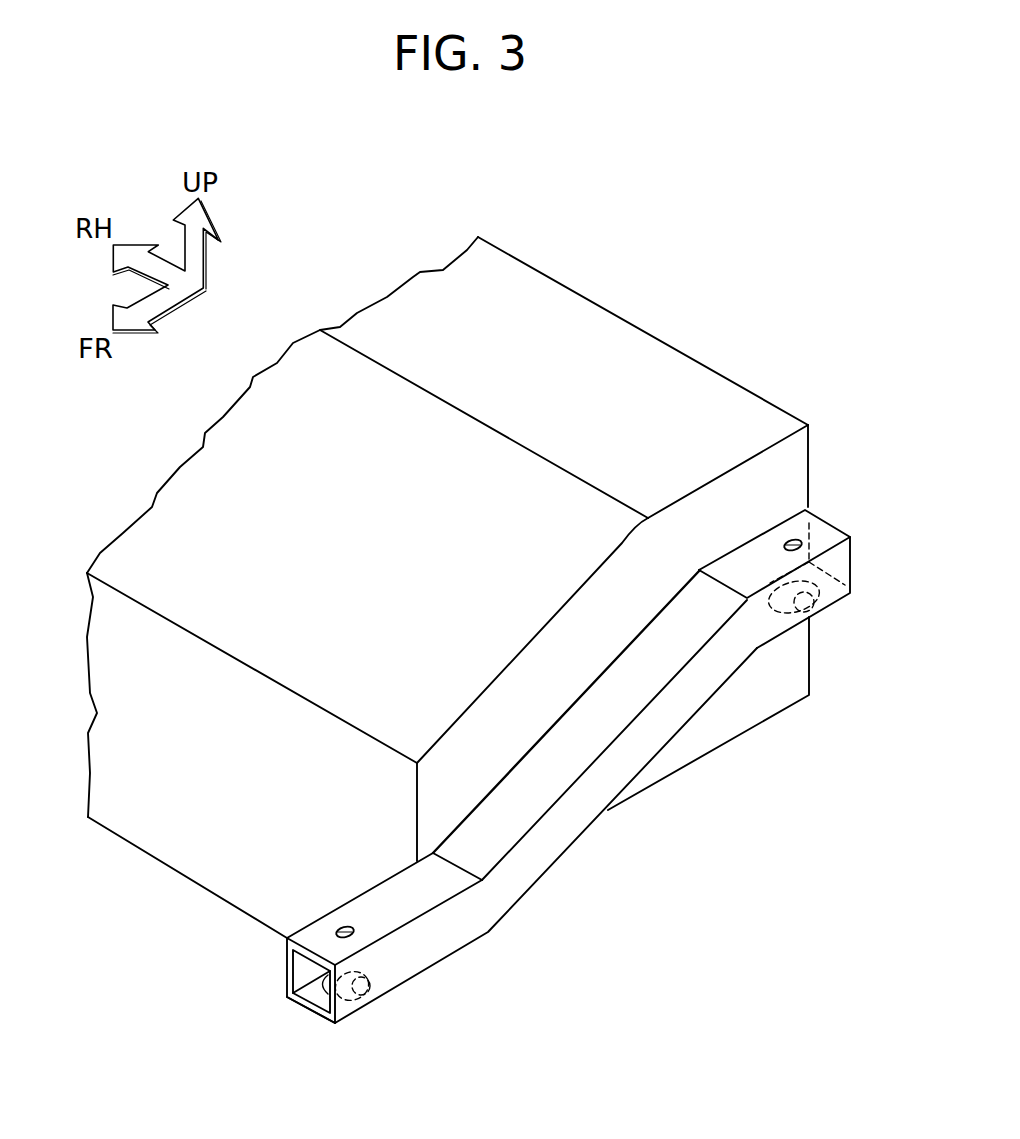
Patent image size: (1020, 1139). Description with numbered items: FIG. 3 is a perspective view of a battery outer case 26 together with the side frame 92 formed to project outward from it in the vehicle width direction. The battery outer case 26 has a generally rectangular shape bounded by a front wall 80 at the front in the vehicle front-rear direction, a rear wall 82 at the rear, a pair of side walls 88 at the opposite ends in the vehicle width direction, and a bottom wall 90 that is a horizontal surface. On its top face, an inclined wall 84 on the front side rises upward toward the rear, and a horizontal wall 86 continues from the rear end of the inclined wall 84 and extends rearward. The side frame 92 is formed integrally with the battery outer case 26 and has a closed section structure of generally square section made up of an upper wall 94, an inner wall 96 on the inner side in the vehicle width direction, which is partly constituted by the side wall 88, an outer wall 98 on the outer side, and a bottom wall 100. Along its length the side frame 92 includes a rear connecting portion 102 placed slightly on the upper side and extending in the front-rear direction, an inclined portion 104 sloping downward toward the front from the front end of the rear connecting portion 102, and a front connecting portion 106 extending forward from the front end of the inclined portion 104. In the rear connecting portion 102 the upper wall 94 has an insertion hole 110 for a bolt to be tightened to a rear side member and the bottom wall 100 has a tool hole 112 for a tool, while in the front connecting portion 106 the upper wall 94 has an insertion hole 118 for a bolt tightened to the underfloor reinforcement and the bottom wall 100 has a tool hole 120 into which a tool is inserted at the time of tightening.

The battery outer case 26 is at (528, 300).
The front wall 80 is at (197, 833).
The rear wall 82 is at (643, 328).
The inclined wall 84 is at (345, 533).
The horizontal wall 86 is at (575, 422).
The side wall 88 is at (533, 718).
The bottom wall 90 is at (712, 750).
The side frame 92 is at (610, 654).
The upper wall 94 is at (310, 943).
The inner wall 96 is at (287, 962).
The outer wall 98 is at (342, 1008).
The bottom wall 100 is at (303, 1008).
The rear connecting portion 102 is at (737, 567).
The inclined portion 104 is at (498, 805).
The front connecting portion 106 is at (375, 902).
The insertion hole 110 is at (788, 543).
The tool hole 112 is at (797, 615).
The insertion hole 118 is at (342, 927).
The tool hole 120 is at (370, 1000).